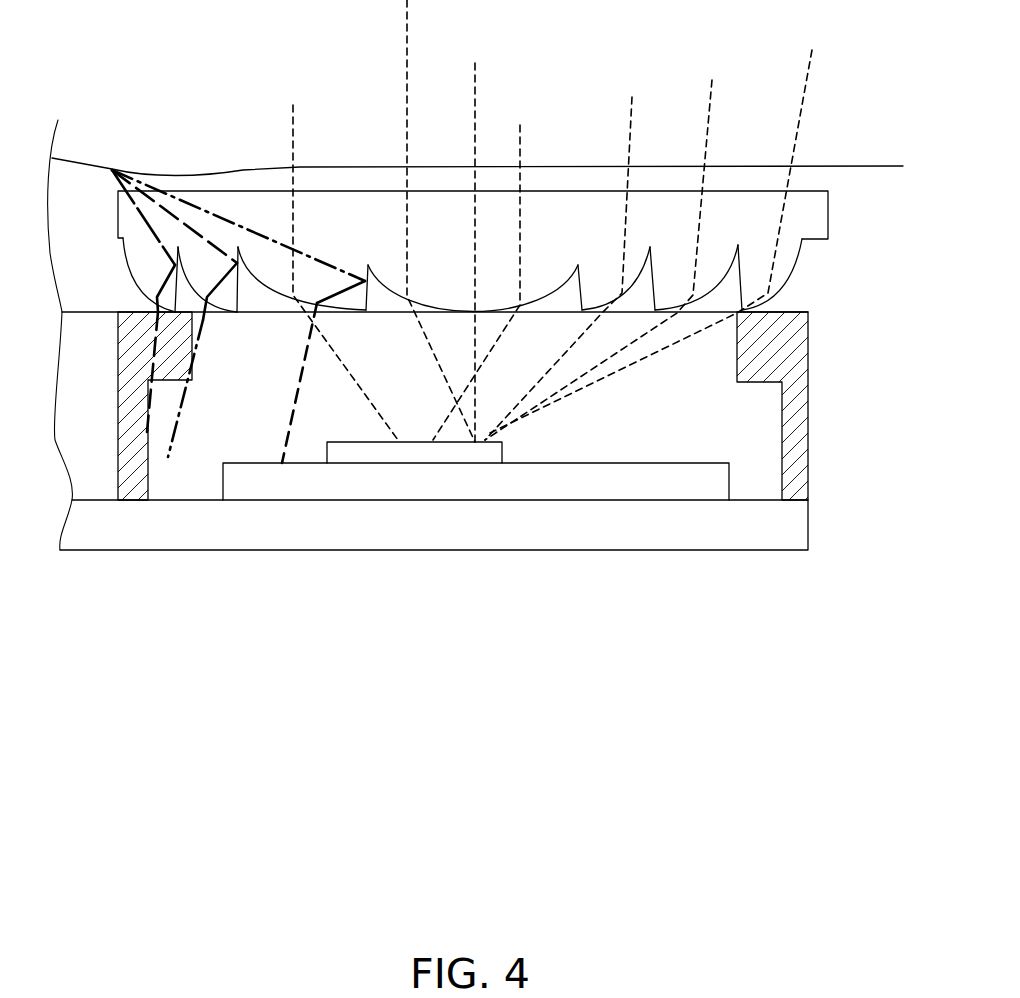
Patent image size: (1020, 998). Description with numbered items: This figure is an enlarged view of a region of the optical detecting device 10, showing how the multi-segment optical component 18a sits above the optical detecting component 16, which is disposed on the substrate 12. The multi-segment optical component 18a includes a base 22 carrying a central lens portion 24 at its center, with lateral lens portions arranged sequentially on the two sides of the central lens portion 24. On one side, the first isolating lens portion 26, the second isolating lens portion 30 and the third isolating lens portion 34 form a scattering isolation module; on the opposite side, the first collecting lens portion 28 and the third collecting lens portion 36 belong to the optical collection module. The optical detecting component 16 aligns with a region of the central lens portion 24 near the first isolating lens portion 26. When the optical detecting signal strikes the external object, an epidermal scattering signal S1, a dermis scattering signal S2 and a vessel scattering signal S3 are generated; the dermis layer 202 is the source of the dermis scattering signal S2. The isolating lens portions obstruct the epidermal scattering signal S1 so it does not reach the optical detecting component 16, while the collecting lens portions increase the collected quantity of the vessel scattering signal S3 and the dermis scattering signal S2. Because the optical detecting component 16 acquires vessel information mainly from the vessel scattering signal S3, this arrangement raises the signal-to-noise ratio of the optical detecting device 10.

The optical detecting device 10 is at (848, 473).
The substrate 12 is at (297, 537).
The optical detecting component 16 is at (388, 455).
The multi-segment optical component 18a is at (479, 211).
The base 22 is at (813, 215).
The central lens portion 24 is at (438, 283).
The first isolating lens portion 26 is at (275, 267).
The first collecting lens portion 28 is at (592, 283).
The second isolating lens portion 30 is at (236, 258).
The third isolating lens portion 34 is at (150, 267).
The third collecting lens portion 36 is at (762, 283).
The dermis layer 202 is at (239, 145).
The epidermal scattering signal S1 is at (292, 418).
The dermis scattering signal S2 is at (592, 365).
The vessel scattering signal S3 is at (477, 337).